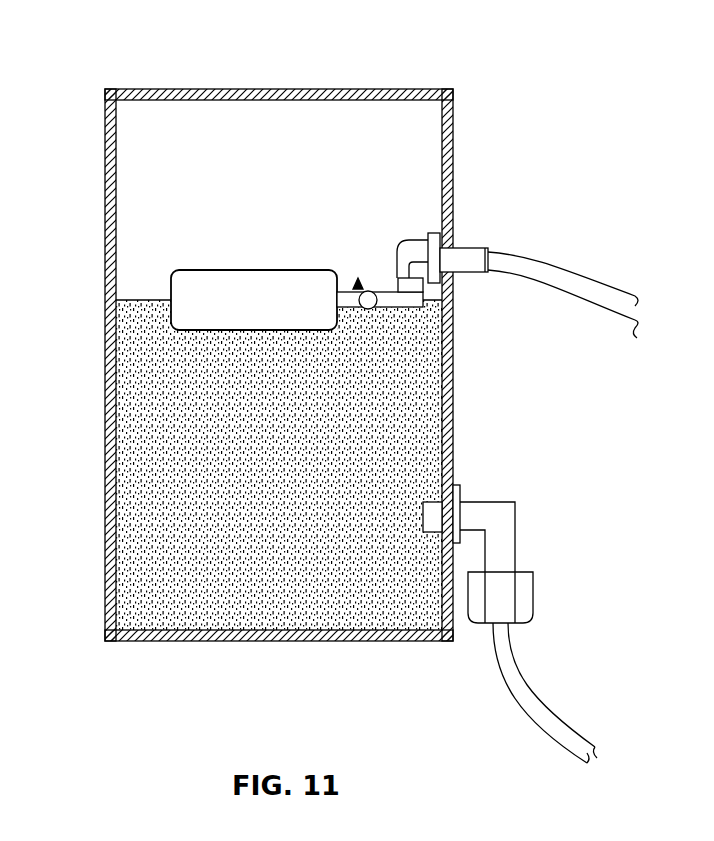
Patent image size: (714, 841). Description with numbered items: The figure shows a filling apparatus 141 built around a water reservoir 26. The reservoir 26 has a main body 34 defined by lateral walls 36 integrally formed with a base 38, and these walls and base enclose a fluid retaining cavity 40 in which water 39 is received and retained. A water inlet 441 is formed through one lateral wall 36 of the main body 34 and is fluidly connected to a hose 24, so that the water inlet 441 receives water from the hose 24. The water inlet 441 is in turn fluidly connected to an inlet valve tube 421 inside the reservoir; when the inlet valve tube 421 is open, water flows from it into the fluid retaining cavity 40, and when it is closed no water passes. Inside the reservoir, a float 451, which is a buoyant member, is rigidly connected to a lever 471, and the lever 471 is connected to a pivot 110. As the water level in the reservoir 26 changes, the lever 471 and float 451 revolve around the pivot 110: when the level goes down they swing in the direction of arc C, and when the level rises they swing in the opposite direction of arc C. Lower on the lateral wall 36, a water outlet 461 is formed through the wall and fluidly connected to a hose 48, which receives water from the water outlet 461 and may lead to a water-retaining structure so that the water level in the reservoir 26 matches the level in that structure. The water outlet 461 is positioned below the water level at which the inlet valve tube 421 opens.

The filling apparatus 141 is at (138, 67).
The fluid retaining cavity 40 is at (410, 112).
The main body 34 is at (452, 90).
The water reservoir 26 is at (455, 183).
The lateral wall 36 is at (105, 567).
The base 38 is at (165, 643).
The water 39 is at (128, 503).
The float 451 is at (238, 283).
The lever 471 is at (353, 300).
The arc C is at (364, 284).
The pivot 110 is at (368, 310).
The inlet valve tube 421 is at (400, 309).
The water inlet 441 is at (463, 250).
The hose 24 is at (565, 276).
The water outlet 461 is at (455, 508).
The hose 48 is at (530, 710).